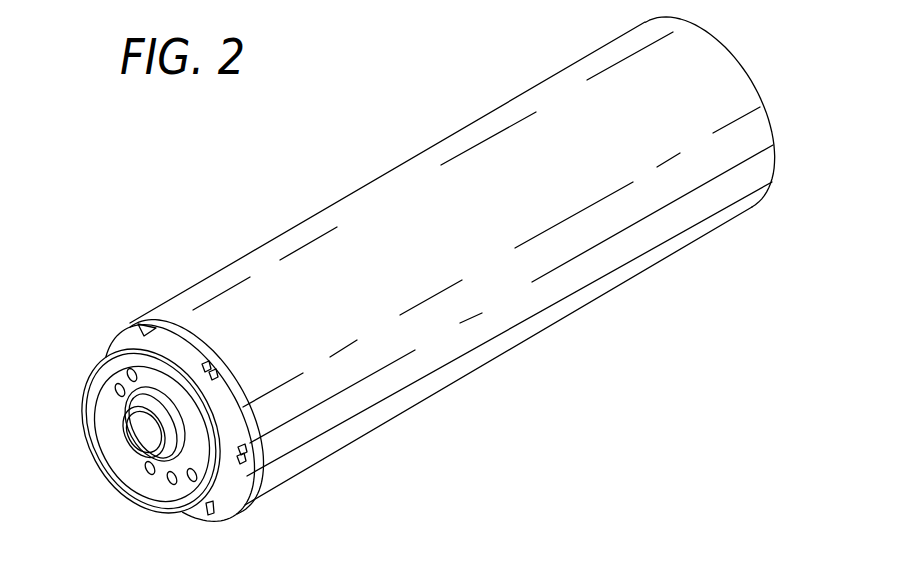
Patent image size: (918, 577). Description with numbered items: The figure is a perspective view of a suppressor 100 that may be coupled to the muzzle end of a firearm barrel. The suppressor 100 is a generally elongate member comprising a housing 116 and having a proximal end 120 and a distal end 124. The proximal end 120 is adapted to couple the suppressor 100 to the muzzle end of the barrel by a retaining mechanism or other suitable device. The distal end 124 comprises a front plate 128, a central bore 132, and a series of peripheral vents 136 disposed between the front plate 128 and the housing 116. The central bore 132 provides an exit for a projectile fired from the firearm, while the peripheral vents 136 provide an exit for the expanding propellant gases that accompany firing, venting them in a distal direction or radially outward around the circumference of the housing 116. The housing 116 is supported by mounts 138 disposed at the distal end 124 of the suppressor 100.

The suppressor 100 is at (625, 380).
The housing 116 is at (541, 100).
The proximal end 120 is at (770, 118).
The distal end 124 is at (96, 476).
The front plate 128 is at (162, 470).
The central bore 132 is at (138, 424).
The peripheral vents 136 is at (187, 345).
The mounts 138 is at (140, 326).